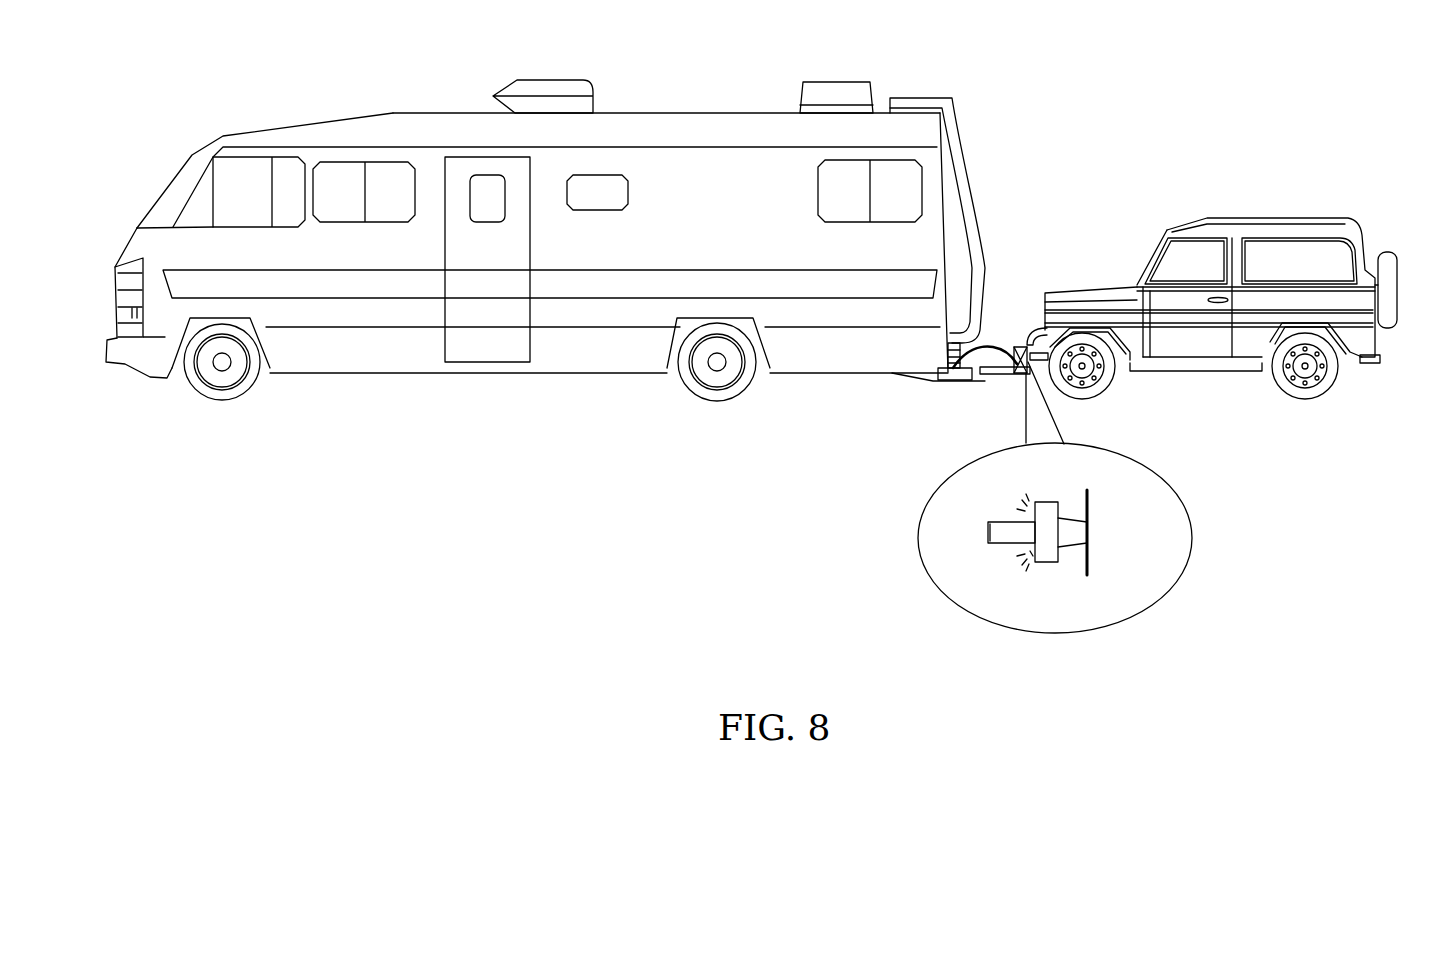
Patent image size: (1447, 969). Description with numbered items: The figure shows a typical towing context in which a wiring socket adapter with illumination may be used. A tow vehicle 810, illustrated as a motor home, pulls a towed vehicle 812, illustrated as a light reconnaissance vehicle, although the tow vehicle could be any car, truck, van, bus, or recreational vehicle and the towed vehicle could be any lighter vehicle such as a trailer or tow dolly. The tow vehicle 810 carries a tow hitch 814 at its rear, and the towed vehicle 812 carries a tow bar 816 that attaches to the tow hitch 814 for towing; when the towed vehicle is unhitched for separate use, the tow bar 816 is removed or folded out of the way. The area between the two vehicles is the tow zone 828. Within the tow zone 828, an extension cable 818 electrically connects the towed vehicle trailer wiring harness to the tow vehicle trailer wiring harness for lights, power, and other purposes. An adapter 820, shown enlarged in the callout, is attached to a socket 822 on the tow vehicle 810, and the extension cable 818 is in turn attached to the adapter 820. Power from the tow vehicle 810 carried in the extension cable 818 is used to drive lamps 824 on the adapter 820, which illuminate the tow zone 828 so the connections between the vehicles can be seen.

The tow vehicle 810 is at (188, 237).
The towed vehicle 812 is at (1357, 250).
The tow hitch 814 is at (977, 382).
The tow bar 816 is at (1000, 356).
The extension cable 818 is at (967, 378).
The adapter 820 is at (1045, 502).
The socket 822 is at (1090, 512).
The lamps 824 is at (1026, 563).
The tow zone 828 is at (1033, 256).